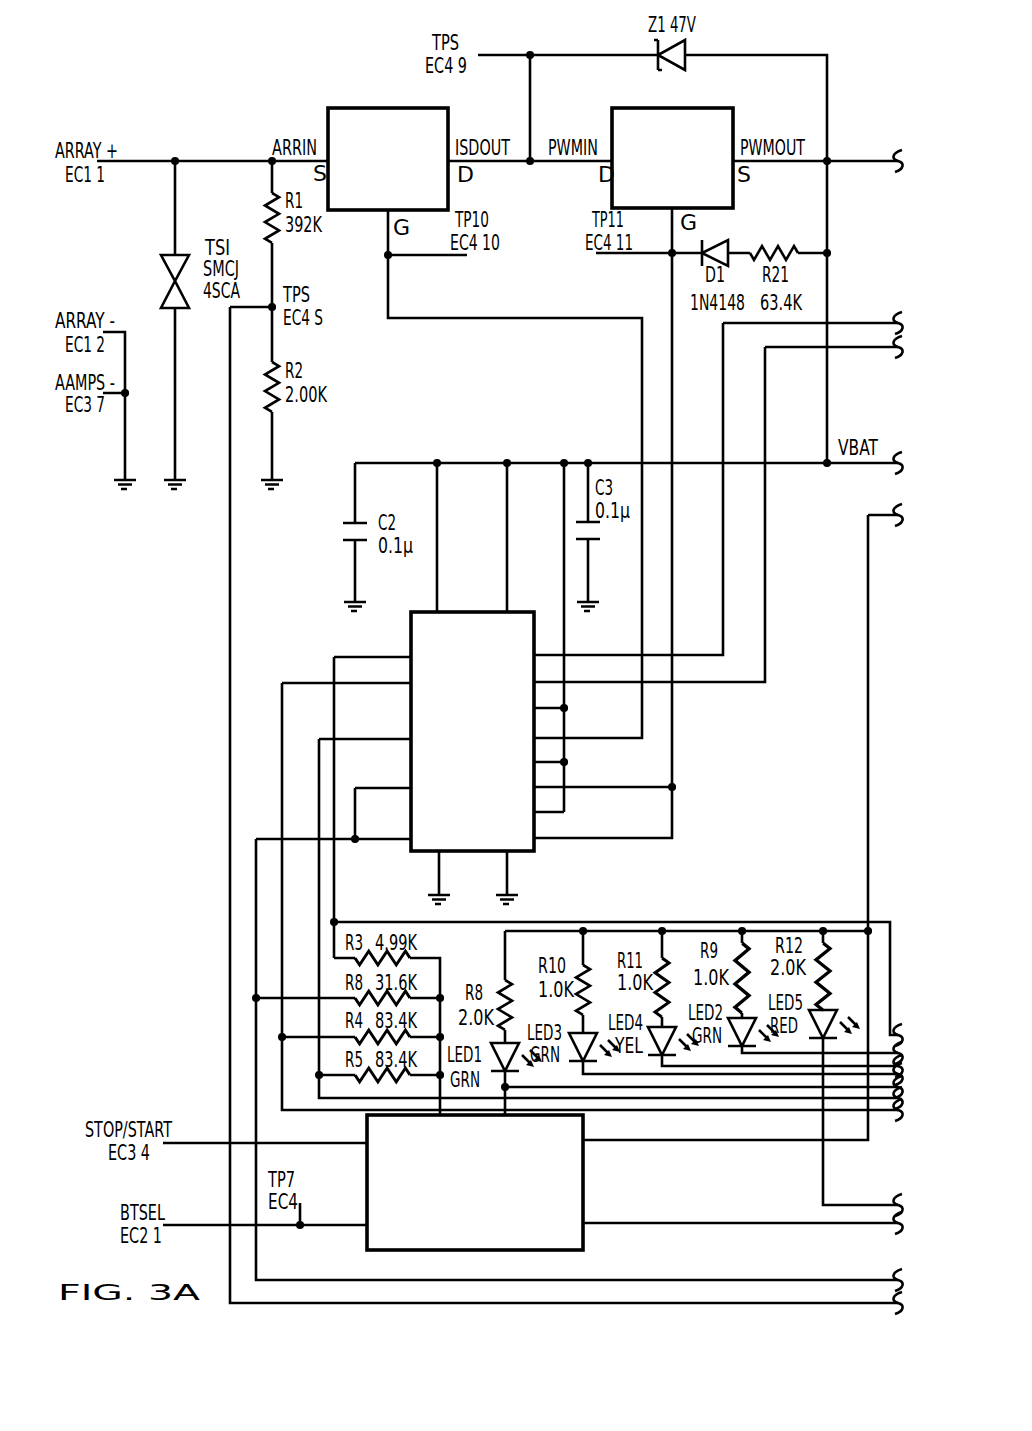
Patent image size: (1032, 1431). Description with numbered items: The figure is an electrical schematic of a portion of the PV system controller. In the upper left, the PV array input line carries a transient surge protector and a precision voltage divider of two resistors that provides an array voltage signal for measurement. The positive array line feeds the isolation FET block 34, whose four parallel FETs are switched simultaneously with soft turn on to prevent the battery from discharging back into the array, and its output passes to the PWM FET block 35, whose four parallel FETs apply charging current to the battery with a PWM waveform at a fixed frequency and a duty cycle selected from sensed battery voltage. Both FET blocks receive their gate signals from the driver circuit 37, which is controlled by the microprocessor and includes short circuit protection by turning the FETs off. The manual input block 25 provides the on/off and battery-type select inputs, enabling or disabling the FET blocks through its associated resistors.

The isolation FET block 34 is at (354, 108).
The PWM FET block 35 is at (710, 208).
The driver circuit 37 is at (415, 853).
The manual input block 25 is at (583, 1183).